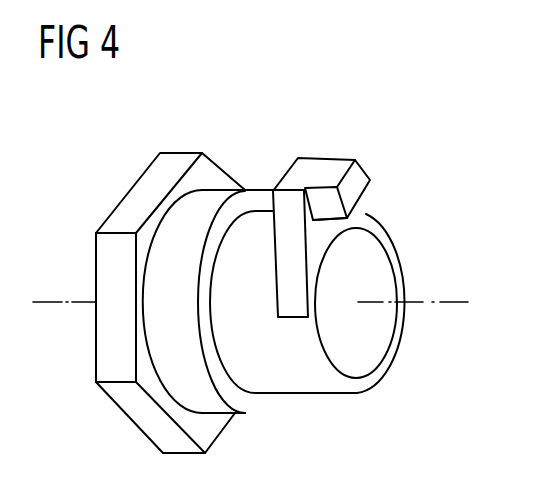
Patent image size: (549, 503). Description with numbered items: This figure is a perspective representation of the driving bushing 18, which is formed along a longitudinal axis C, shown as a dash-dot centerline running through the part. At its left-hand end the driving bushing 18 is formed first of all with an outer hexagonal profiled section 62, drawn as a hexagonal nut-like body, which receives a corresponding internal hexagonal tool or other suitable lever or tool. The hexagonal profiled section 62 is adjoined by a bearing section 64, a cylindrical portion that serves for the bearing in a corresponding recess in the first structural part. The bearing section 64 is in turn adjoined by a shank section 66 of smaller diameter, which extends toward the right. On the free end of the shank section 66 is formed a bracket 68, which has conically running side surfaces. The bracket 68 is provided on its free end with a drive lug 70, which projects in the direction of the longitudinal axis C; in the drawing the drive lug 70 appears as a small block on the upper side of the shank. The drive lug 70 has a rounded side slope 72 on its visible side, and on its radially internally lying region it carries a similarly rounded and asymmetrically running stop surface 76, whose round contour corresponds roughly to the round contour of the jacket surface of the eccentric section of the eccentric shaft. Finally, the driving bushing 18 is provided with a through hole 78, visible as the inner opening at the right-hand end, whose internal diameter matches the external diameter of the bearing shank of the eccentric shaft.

The driving bushing 18 is at (297, 119).
The outer hexagonal profiled section 62 is at (148, 187).
The bearing section 64 is at (213, 202).
The shank section 66 is at (304, 386).
The bracket 68 is at (287, 286).
The drive lug 70 is at (358, 190).
The rounded side slope 72 is at (324, 207).
The stop surface 76 is at (357, 207).
The through hole 78 is at (360, 367).
The longitudinal axis C is at (453, 302).